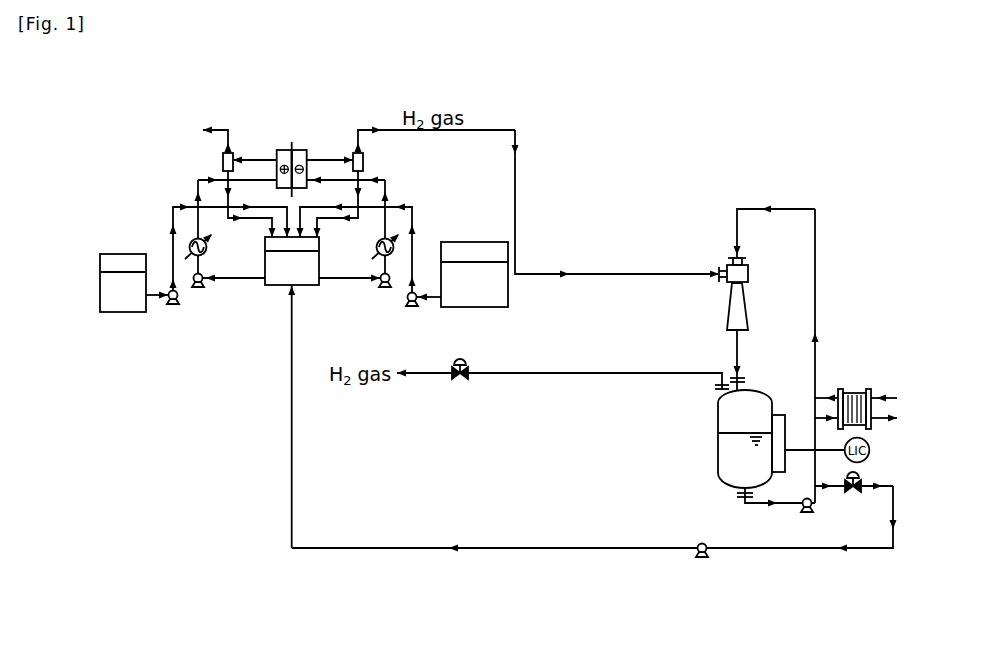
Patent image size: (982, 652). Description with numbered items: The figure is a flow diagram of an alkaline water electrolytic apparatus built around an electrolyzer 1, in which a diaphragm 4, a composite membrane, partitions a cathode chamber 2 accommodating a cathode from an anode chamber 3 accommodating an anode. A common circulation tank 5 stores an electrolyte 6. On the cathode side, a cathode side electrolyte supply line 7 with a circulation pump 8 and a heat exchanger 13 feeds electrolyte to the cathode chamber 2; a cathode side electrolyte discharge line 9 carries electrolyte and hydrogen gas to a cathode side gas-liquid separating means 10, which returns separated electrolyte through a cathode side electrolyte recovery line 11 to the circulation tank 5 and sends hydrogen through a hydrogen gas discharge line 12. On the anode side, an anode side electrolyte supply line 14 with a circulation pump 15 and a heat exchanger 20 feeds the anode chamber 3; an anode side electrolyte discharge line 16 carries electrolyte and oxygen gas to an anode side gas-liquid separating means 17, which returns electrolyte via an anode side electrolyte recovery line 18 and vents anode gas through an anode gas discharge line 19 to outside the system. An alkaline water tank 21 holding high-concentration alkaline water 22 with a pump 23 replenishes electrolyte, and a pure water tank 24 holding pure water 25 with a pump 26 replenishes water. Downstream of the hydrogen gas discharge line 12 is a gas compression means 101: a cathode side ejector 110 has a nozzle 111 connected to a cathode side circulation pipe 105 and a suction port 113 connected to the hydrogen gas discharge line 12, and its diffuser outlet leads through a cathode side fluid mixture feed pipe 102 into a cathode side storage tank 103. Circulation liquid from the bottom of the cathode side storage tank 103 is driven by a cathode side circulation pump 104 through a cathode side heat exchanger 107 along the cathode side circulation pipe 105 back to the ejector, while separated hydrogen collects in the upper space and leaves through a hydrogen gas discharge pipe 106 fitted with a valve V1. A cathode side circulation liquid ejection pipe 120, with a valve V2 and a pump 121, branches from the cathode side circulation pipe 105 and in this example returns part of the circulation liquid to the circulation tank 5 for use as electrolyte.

The electrolyzer 1 is at (298, 136).
The cathode chamber 2 is at (302, 150).
The anode chamber 3 is at (284, 150).
The diaphragm 4 is at (291, 194).
The circulation tank 5 is at (308, 289).
The electrolyte 6 is at (312, 266).
The cathode side electrolyte supply line 7 is at (348, 282).
The circulation pump 8 is at (386, 289).
The cathode side electrolyte discharge line 9 is at (335, 159).
The cathode side gas-liquid separating means 10 is at (364, 160).
The cathode side electrolyte recovery line 11 is at (354, 218).
The hydrogen gas discharge line 12 is at (361, 128).
The heat exchanger 13 is at (377, 249).
The anode side electrolyte supply line 14 is at (250, 282).
The circulation pump 15 is at (199, 289).
The anode side electrolyte discharge line 16 is at (250, 157).
The anode side gas-liquid separating means 17 is at (222, 160).
The anode side electrolyte recovery line 18 is at (248, 221).
The anode gas discharge line 19 is at (224, 128).
The heat exchanger 20 is at (206, 252).
The alkaline water tank 21 is at (118, 313).
The high-concentration alkaline water 22 is at (107, 275).
The pump 23 is at (173, 306).
The pure water tank 24 is at (491, 308).
The pure water 25 is at (495, 288).
The pump 26 is at (413, 307).
The gas compression means 101 is at (792, 196).
The cathode side fluid mixture feed pipe 102 is at (740, 360).
The cathode side storage tank 103 is at (720, 423).
The cathode side circulation pump 104 is at (808, 512).
The cathode side circulation pipe 105 is at (817, 312).
The hydrogen gas discharge pipe 106 is at (577, 378).
The cathode side heat exchanger 107 is at (855, 389).
The cathode side ejector 110 is at (747, 310).
The nozzle 111 is at (743, 258).
The suction port 113 is at (720, 283).
The cathode side circulation liquid ejection pipe 120 is at (526, 546).
The pump 121 is at (702, 558).
The valve V1 is at (459, 382).
The valve V2 is at (854, 494).